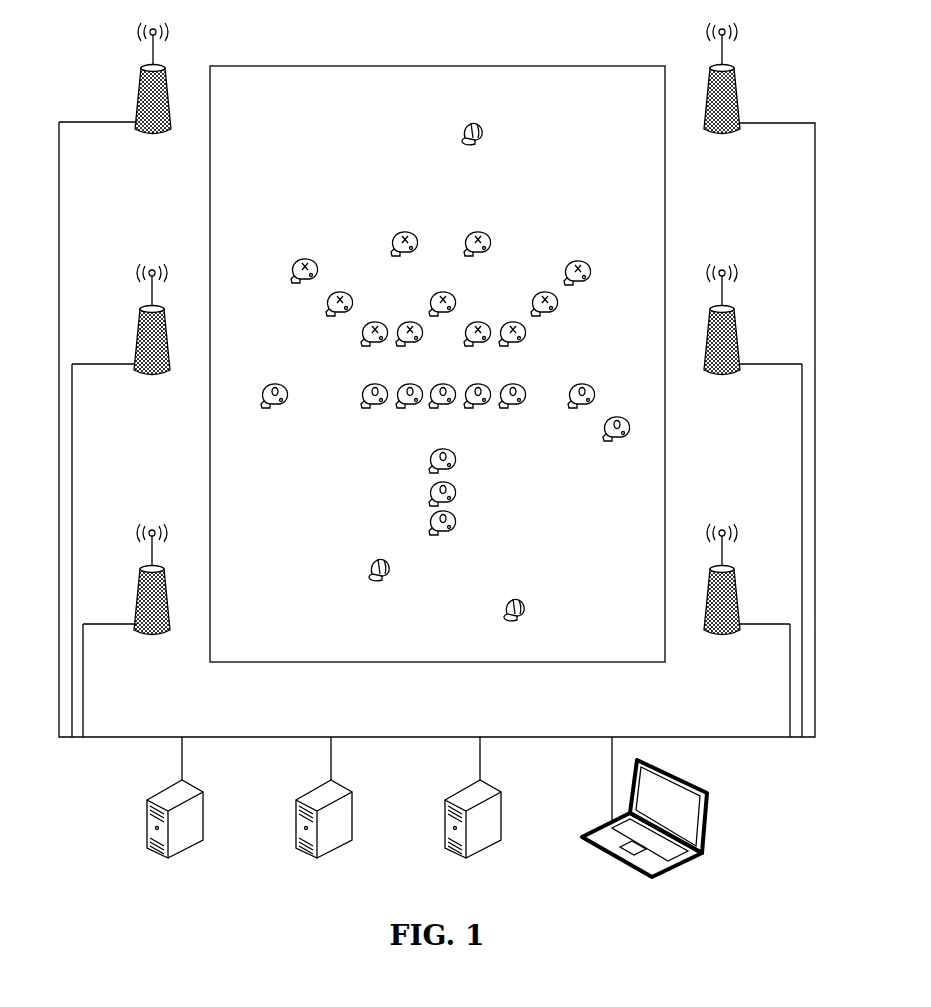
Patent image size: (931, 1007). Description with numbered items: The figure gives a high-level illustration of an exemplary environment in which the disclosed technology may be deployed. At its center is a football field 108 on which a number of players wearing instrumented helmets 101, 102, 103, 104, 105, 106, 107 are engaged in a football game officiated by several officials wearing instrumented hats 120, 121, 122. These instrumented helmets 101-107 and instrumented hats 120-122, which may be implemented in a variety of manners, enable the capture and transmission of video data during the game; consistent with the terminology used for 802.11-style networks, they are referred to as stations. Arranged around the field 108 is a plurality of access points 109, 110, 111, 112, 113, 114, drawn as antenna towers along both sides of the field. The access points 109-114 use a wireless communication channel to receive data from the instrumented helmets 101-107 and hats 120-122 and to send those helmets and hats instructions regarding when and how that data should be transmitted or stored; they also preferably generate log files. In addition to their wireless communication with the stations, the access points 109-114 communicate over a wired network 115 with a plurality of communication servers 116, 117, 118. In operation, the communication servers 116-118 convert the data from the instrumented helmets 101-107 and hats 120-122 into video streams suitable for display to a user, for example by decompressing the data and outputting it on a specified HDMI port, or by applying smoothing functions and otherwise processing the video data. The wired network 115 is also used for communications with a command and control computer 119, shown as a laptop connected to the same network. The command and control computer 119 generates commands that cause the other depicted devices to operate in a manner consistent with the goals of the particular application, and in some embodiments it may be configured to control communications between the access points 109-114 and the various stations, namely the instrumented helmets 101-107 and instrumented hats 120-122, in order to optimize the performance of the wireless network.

The instrumented helmet 101 is at (443, 447).
The instrumented helmet 102 is at (275, 408).
The instrumented helmet 103 is at (617, 441).
The instrumented helmet 104 is at (346, 291).
The instrumented helmet 105 is at (443, 290).
The instrumented helmet 106 is at (541, 292).
The instrumented helmet 107 is at (406, 410).
The football field 108 is at (258, 667).
The access point 109 is at (152, 634).
The access point 110 is at (152, 374).
The access point 111 is at (153, 133).
The access point 112 is at (722, 133).
The access point 113 is at (722, 374).
The access point 114 is at (722, 634).
The wired network 115 is at (110, 742).
The communication server 116 is at (205, 811).
The communication server 117 is at (354, 811).
The communication server 118 is at (503, 811).
The command and control computer 119 is at (710, 815).
The instrumented hat 120 is at (464, 125).
The instrumented hat 121 is at (509, 597).
The instrumented hat 122 is at (374, 557).